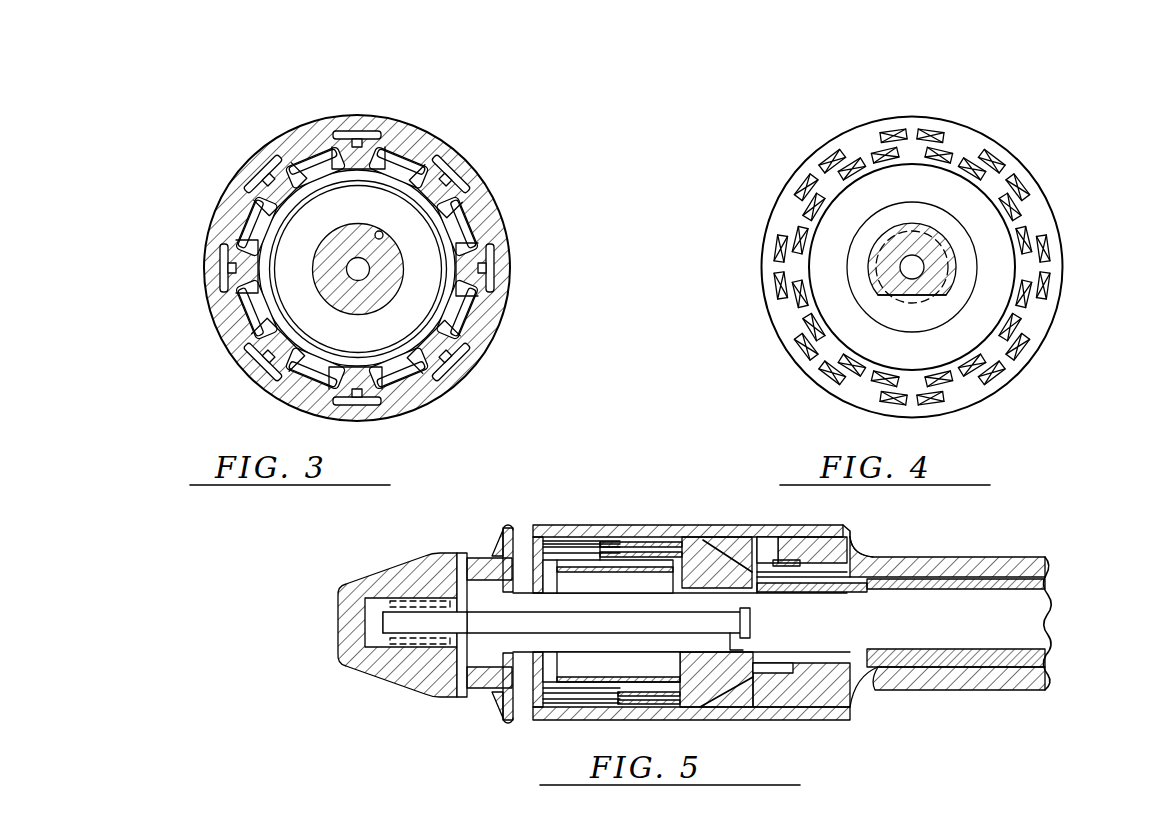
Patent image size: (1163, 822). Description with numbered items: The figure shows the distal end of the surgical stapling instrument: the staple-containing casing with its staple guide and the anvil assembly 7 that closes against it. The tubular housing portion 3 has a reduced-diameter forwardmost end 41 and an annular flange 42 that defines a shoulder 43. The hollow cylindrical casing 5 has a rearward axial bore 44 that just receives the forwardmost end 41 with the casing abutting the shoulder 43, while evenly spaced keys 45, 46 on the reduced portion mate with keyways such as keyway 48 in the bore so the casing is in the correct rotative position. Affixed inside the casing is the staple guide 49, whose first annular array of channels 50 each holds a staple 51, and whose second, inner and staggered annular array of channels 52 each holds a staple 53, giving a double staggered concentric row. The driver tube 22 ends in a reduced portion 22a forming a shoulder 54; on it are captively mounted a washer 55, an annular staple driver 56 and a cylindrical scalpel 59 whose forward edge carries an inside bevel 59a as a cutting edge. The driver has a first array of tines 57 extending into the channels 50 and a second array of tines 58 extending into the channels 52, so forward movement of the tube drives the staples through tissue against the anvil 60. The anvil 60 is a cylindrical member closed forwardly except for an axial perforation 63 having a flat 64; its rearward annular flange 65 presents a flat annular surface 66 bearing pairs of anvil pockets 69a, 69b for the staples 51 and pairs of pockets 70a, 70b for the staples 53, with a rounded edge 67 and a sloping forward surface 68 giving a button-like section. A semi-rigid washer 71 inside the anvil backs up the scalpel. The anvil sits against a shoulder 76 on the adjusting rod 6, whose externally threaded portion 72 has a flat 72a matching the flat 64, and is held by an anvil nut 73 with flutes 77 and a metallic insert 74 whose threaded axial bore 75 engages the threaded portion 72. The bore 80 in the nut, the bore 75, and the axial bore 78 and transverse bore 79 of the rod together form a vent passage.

In FIG. 5, the tubular housing portion 3 is at (925, 563).
In FIG. 5, the cylindrical casing 5 is at (652, 525).
In FIG. 5, the adjusting rod 6 is at (968, 635).
In FIG. 4, the anvil assembly 7 is at (932, 108).
In FIG. 5, the anvil assembly 7 is at (399, 560).
In FIG. 5, the driver tube 22 is at (978, 585).
In FIG. 5, the reduced portion 22a is at (717, 595).
In FIG. 5, the forwardmost end 41 is at (780, 560).
In FIG. 5, the annular flange 42 is at (860, 550).
In FIG. 5, the shoulder 43 is at (846, 528).
In FIG. 5, the axial bore 44 is at (740, 538).
In FIG. 5, the key 45 is at (805, 538).
In FIG. 5, the key 46 is at (845, 700).
In FIG. 5, the keyway 48 is at (800, 690).
In FIG. 3, the staple guide 49 is at (500, 330).
In FIG. 5, the staple guide 49 is at (548, 538).
In FIG. 3, the channels 50 is at (283, 168).
In FIG. 5, the channels 50 is at (585, 545).
In FIG. 3, the staple 51 is at (235, 180).
In FIG. 5, the staple 51 is at (588, 540).
In FIG. 3, the channels 52 is at (340, 130).
In FIG. 3, the staple 53 is at (322, 140).
In FIG. 5, the shoulder 54 is at (765, 585).
In FIG. 5, the washer 55 is at (760, 680).
In FIG. 5, the annular staple driver 56 is at (700, 712).
In FIG. 5, the tines 57 is at (665, 544).
In FIG. 5, the tines 58 is at (638, 560).
In FIG. 3, the cylindrical scalpel 59 is at (300, 210).
In FIG. 5, the cylindrical scalpel 59 is at (611, 666).
In FIG. 5, the inside bevel 59a is at (608, 579).
In FIG. 5, the anvil 60 is at (498, 555).
In FIG. 4, the axial perforation 63 is at (920, 243).
In FIG. 5, the axial perforation 63 is at (462, 694).
In FIG. 4, the flat 64 is at (905, 290).
In FIG. 5, the annular flange 65 is at (507, 530).
In FIG. 4, the flat annular surface 66 is at (1042, 322).
In FIG. 5, the flat annular surface 66 is at (516, 712).
In FIG. 4, the rounded edge 67 is at (1057, 207).
In FIG. 5, the rounded edge 67 is at (515, 528).
In FIG. 5, the forward surface 68 is at (486, 548).
In FIG. 4, the anvil pocket 69a is at (826, 160).
In FIG. 4, the anvil pocket 69b is at (800, 185).
In FIG. 4, the anvil pocket 70a is at (882, 133).
In FIG. 4, the anvil pocket 70b is at (852, 150).
In FIG. 5, the semi-rigid washer 71 is at (468, 556).
In FIG. 4, the threaded portion 72 is at (935, 240).
In FIG. 5, the threaded portion 72 is at (400, 652).
In FIG. 4, the flat 72a is at (890, 290).
In FIG. 5, the anvil nut 73 is at (395, 676).
In FIG. 5, the metallic insert 74 is at (345, 590).
In FIG. 5, the axial bore 75 is at (392, 603).
In FIG. 5, the shoulder 76 is at (470, 605).
In FIG. 5, the grooves or flutes 77 is at (437, 552).
In FIG. 3, the axial bore 78 is at (384, 233).
In FIG. 4, the axial bore 78 is at (925, 270).
In FIG. 5, the axial bore 78 is at (545, 612).
In FIG. 5, the transverse bore 79 is at (730, 640).
In FIG. 5, the bore 80 is at (345, 617).